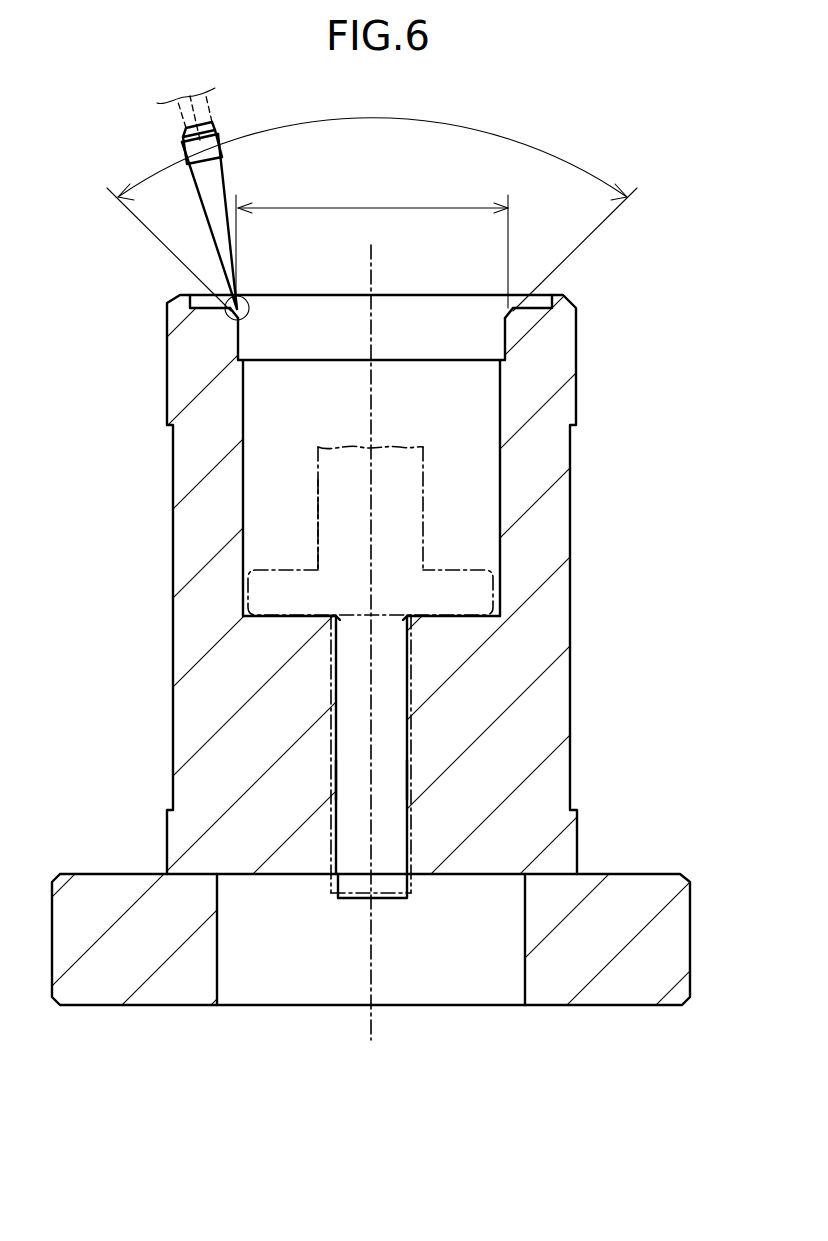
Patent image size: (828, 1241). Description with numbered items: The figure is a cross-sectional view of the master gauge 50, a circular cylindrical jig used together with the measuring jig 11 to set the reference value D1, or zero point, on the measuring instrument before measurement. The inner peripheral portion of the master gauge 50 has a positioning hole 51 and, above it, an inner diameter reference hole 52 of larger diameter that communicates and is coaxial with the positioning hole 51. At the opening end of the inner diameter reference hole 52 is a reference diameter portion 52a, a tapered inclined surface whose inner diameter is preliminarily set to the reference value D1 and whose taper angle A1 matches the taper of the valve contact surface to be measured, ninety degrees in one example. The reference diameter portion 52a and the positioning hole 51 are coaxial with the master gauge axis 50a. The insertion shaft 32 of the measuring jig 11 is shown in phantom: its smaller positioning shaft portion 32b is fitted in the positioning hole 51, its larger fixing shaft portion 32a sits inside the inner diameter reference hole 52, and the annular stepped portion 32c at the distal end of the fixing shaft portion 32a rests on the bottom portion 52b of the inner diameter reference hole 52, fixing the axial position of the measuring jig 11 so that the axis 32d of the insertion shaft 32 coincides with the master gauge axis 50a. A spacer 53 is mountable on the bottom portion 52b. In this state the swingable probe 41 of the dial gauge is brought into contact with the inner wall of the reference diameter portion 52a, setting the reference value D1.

The master gauge 50 is at (580, 344).
The master gauge axis 50a is at (372, 776).
The positioning hole 51 is at (404, 822).
The inner diameter reference hole 52 is at (498, 425).
The reference diameter portion 52a is at (246, 295).
The bottom portion 52b is at (437, 611).
The spacer 53 is at (438, 572).
The measuring jig 11 is at (280, 663).
The insertion shaft 32 is at (308, 503).
The fixing shaft portion 32a is at (320, 550).
The positioning shaft portion 32b is at (333, 757).
The stepped portion 32c is at (325, 575).
The axis of the insertion shaft 32d is at (372, 805).
The probe 41 is at (210, 242).
The reference value D1 is at (372, 243).
The angle of taper A1 is at (372, 198).